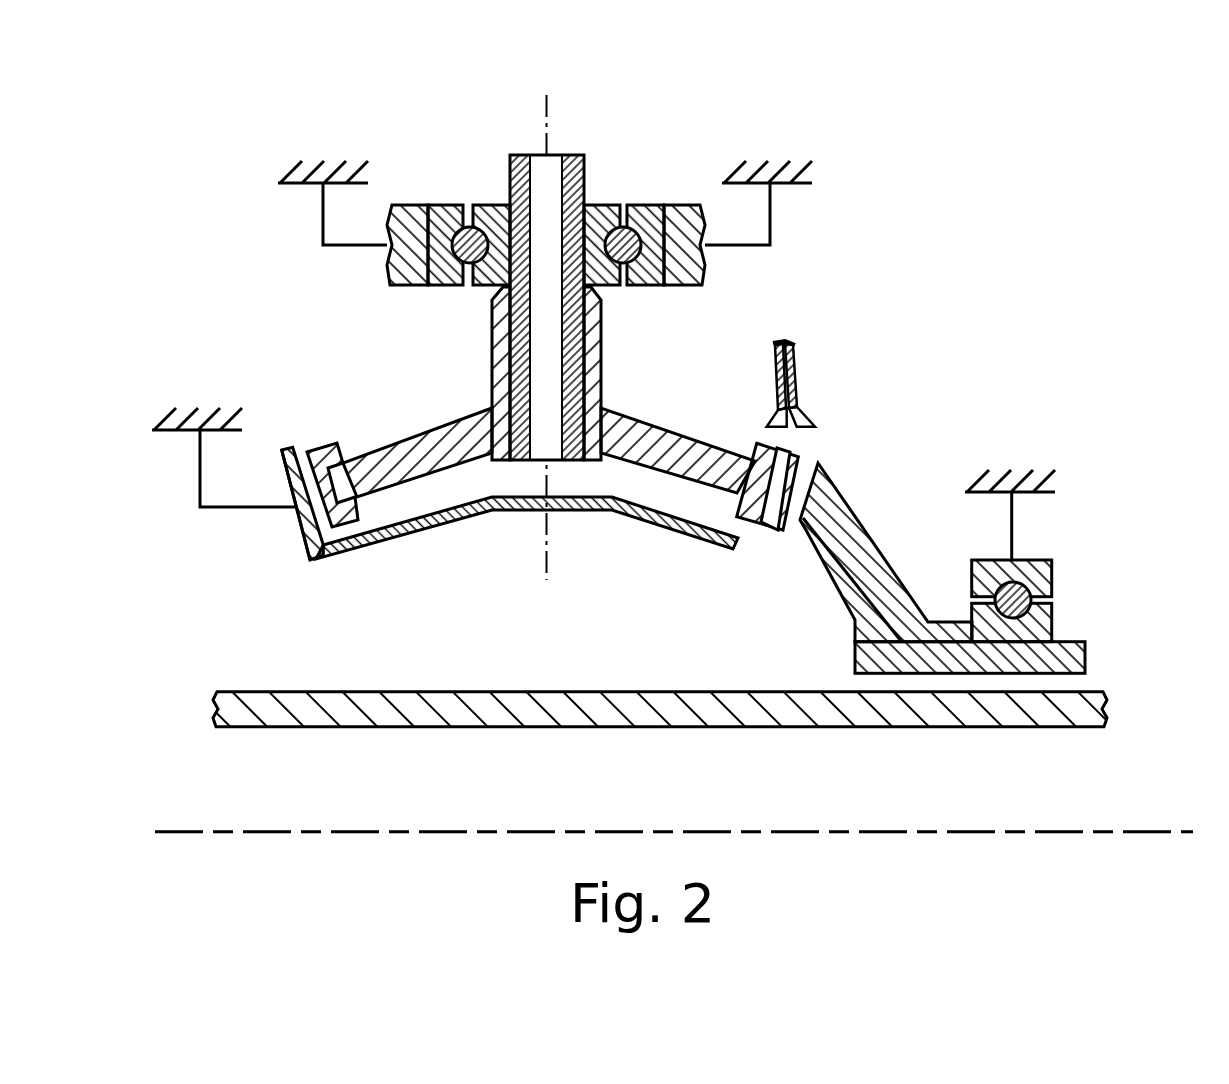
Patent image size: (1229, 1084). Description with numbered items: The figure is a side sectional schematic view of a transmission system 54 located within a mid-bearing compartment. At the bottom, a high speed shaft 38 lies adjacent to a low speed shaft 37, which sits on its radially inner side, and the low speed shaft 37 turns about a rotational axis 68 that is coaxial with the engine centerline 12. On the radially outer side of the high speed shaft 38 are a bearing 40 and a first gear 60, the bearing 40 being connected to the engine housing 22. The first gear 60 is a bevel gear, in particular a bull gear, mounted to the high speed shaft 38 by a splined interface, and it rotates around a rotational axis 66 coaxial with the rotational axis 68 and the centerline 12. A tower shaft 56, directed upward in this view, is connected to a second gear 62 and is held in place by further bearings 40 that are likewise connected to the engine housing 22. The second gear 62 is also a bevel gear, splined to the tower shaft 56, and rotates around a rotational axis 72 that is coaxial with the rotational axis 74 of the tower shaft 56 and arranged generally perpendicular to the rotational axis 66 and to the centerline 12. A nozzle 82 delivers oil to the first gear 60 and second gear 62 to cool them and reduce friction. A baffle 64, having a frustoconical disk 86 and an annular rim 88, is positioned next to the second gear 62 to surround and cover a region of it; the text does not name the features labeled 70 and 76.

The centerline 12 is at (674, 803).
The engine housing 22 is at (340, 154).
The low speed shaft 37 is at (1107, 710).
The high speed shaft 38 is at (1085, 655).
The bearing 40 is at (440, 205).
The transmission system 54 is at (917, 255).
The tower shaft 56 is at (586, 168).
The first gear 60 is at (868, 538).
The second gear 62 is at (641, 411).
The baffle 64 is at (325, 568).
The rotational axis 66 is at (674, 803).
The rotational axis 68 is at (995, 831).
The hinge 70 is at (802, 455).
The rotational axis 72 is at (605, 352).
The rotational axis 74 is at (548, 558).
The clamping element 76 is at (312, 448).
The nozzle 82 is at (797, 367).
The disk 86 is at (400, 547).
The rim 88 is at (299, 539).